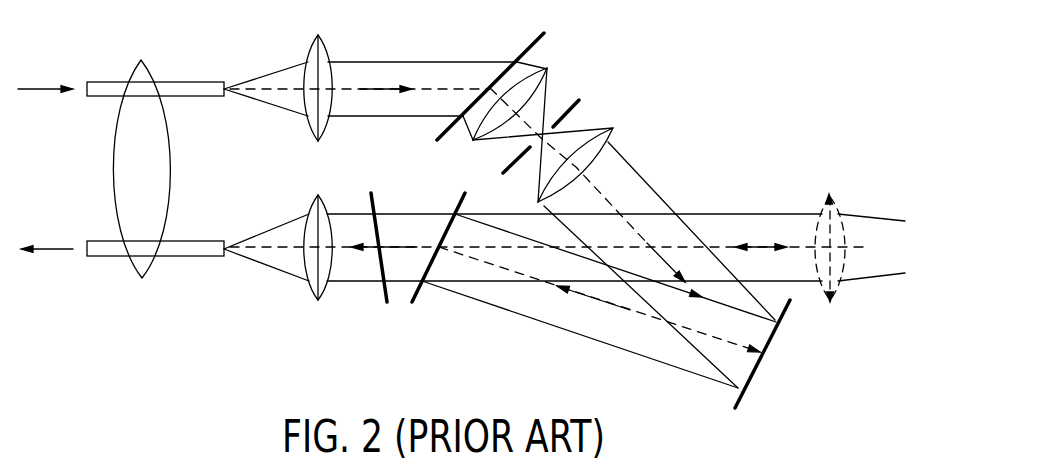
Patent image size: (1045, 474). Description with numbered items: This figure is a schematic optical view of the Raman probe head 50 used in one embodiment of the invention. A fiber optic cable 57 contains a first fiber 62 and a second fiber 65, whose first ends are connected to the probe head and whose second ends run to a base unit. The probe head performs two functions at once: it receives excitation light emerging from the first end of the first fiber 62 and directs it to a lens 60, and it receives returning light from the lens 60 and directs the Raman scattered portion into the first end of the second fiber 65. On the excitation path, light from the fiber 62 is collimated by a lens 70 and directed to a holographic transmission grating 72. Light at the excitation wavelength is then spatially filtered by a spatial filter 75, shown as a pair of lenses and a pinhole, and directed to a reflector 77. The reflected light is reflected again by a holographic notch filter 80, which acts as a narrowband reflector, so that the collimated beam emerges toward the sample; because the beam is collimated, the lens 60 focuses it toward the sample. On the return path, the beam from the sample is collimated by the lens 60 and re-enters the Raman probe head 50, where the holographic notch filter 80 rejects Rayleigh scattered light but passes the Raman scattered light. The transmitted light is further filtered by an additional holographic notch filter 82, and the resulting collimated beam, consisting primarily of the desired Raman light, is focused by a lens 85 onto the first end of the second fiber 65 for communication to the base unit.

The Raman probe head 50 is at (137, 334).
The fiber optic cable 57 is at (138, 62).
The lens 60 is at (834, 197).
The first fiber 62 is at (183, 82).
The second fiber 65 is at (181, 241).
The lens 70 is at (312, 44).
The holographic transmission grating 72 is at (522, 43).
The spatial filter 75 is at (545, 61).
The reflector 77 is at (750, 380).
The holographic notch filter 80 is at (418, 291).
The additional holographic notch filter 82 is at (382, 288).
The lens 85 is at (311, 207).